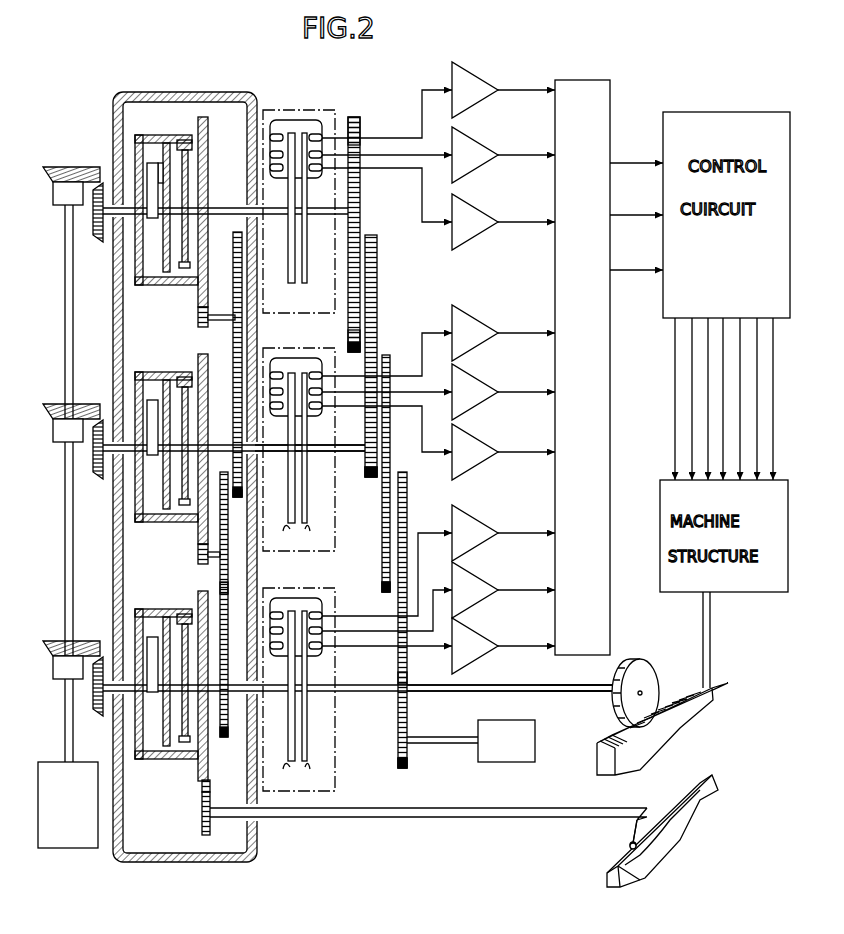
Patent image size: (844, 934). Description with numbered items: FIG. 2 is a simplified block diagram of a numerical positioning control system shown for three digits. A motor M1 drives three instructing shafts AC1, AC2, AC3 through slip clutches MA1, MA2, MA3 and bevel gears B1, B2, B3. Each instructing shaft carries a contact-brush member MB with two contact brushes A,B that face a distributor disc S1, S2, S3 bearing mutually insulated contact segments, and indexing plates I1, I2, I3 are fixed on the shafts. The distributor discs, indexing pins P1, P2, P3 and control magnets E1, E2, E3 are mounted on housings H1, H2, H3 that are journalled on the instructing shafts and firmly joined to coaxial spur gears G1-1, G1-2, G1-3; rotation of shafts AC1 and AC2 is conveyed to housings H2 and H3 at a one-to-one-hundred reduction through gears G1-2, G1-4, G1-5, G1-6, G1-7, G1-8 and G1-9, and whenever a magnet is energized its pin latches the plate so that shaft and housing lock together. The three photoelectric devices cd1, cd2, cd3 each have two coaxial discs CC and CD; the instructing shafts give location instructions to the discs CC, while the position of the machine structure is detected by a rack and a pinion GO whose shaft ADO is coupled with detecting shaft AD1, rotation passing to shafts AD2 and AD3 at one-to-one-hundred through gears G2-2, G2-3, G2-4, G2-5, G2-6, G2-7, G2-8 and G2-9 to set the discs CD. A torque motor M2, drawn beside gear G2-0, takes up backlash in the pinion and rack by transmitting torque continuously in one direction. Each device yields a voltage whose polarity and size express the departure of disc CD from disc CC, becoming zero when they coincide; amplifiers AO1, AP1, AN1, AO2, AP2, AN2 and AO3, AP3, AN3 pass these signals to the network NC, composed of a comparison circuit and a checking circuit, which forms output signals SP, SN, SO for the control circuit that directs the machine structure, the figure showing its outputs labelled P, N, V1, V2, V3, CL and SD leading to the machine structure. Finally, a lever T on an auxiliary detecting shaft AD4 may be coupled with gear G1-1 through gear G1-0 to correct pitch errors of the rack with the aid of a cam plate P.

The housing H3 is at (137, 136).
The housing H2 is at (163, 438).
The housing H1 is at (162, 673).
The contact-brush member MB is at (160, 165).
The contact brushes A,B is at (150, 172).
The distributor disc S3 is at (165, 143).
The distributor disc S2 is at (161, 426).
The distributor disc S1 is at (159, 662).
The control magnet E3 is at (185, 140).
The control magnet E2 is at (187, 428).
The control magnet E1 is at (184, 667).
The indexing pin P3 is at (208, 146).
The indexing pin P2 is at (215, 437).
The indexing pin P1 is at (202, 674).
The indexing plate I3 is at (178, 268).
The indexing plate I2 is at (163, 524).
The indexing plate I1 is at (161, 760).
The bevel gear B3 is at (46, 170).
The bevel gear B2 is at (62, 400).
The bevel gear B1 is at (65, 637).
The slip clutch MA3 is at (56, 198).
The slip clutch MA2 is at (49, 443).
The slip clutch MA1 is at (46, 681).
The instructing shaft AC3 is at (106, 240).
The instructing shaft AC2 is at (95, 470).
The instructing shaft AC1 is at (97, 702).
The spur gear G1-3 is at (200, 299).
The reduction gear G1-9 is at (208, 318).
The reduction gear G1-8 is at (233, 326).
The spur gear G1-2 is at (188, 547).
The reduction gear G1-6 is at (197, 604).
The reduction gear G1-7 is at (240, 497).
The reduction gear G1-5 is at (228, 590).
The spur gear G1-1 is at (183, 784).
The reduction gear G1-4 is at (231, 743).
The gear G1-0 is at (181, 813).
The photoelectric device cd3 is at (320, 113).
The photoelectric device cd2 is at (328, 518).
The photoelectric device cd1 is at (333, 780).
The instruction disc CC is at (290, 276).
The detecting disc CD is at (305, 276).
The detecting shaft AD3 is at (343, 208).
The detecting shaft AD2 is at (343, 453).
The detecting shaft AD1 is at (466, 688).
The auxiliary detecting shaft AD4 is at (378, 818).
The pinion shaft ADO is at (548, 691).
The reduction gear G2-3 is at (360, 122).
The reduction gear G2-9 is at (348, 345).
The reduction gear G2-8 is at (377, 258).
The reduction gear G2-7 is at (377, 465).
The reduction gear G2-2 is at (388, 355).
The reduction gear G2-6 is at (382, 575).
The reduction gear G2-5 is at (407, 518).
The reduction gear G2-4 is at (398, 678).
The gear G2-0 is at (400, 746).
The amplifier AP1 is at (438, 100).
The amplifier AN1 is at (438, 155).
The amplifier AO1 is at (438, 209).
The amplifier AP2 is at (438, 340).
The amplifier AN2 is at (438, 392).
The amplifier AO2 is at (438, 443).
The amplifier AP3 is at (438, 560).
The amplifier AN3 is at (438, 596).
The amplifier AO3 is at (438, 646).
The network NC is at (598, 82).
The output signal SP is at (636, 153).
The output signal SN is at (636, 204).
The output signal SO is at (636, 259).
The cam plate P is at (675, 332).
The element N is at (692, 350).
The signal line V1 is at (708, 371).
The signal line V2 is at (723, 388).
The signal line V3 is at (740, 406).
The signal line CL is at (757, 424).
The signal line SD is at (773, 442).
The motor M1 is at (68, 805).
The torque motor M2 is at (471, 741).
The pinion GO is at (652, 675).
The lever T is at (630, 840).